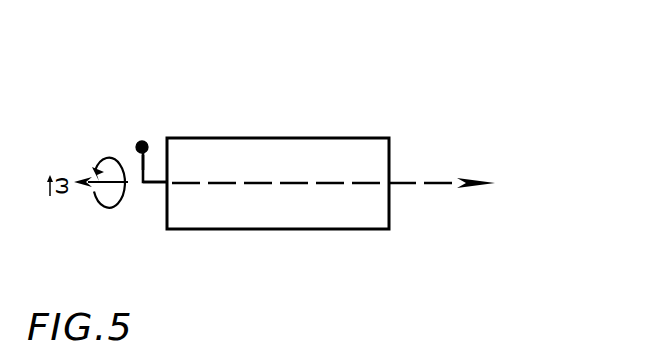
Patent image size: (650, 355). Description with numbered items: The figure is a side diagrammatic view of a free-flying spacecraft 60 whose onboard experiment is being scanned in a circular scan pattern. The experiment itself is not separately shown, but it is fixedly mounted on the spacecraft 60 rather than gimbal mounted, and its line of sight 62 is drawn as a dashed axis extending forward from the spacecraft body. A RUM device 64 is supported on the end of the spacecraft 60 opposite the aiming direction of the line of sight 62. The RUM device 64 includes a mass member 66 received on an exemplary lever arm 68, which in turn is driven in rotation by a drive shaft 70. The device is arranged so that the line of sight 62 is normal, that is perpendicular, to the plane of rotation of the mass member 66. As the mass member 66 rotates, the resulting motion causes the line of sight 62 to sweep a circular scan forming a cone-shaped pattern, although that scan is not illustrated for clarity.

The free-flying spacecraft 60 is at (347, 102).
The line of sight 62 is at (402, 183).
The RUM device 64 is at (132, 133).
The mass member 66 is at (148, 138).
The lever arm 68 is at (140, 163).
The drive shaft 70 is at (153, 186).